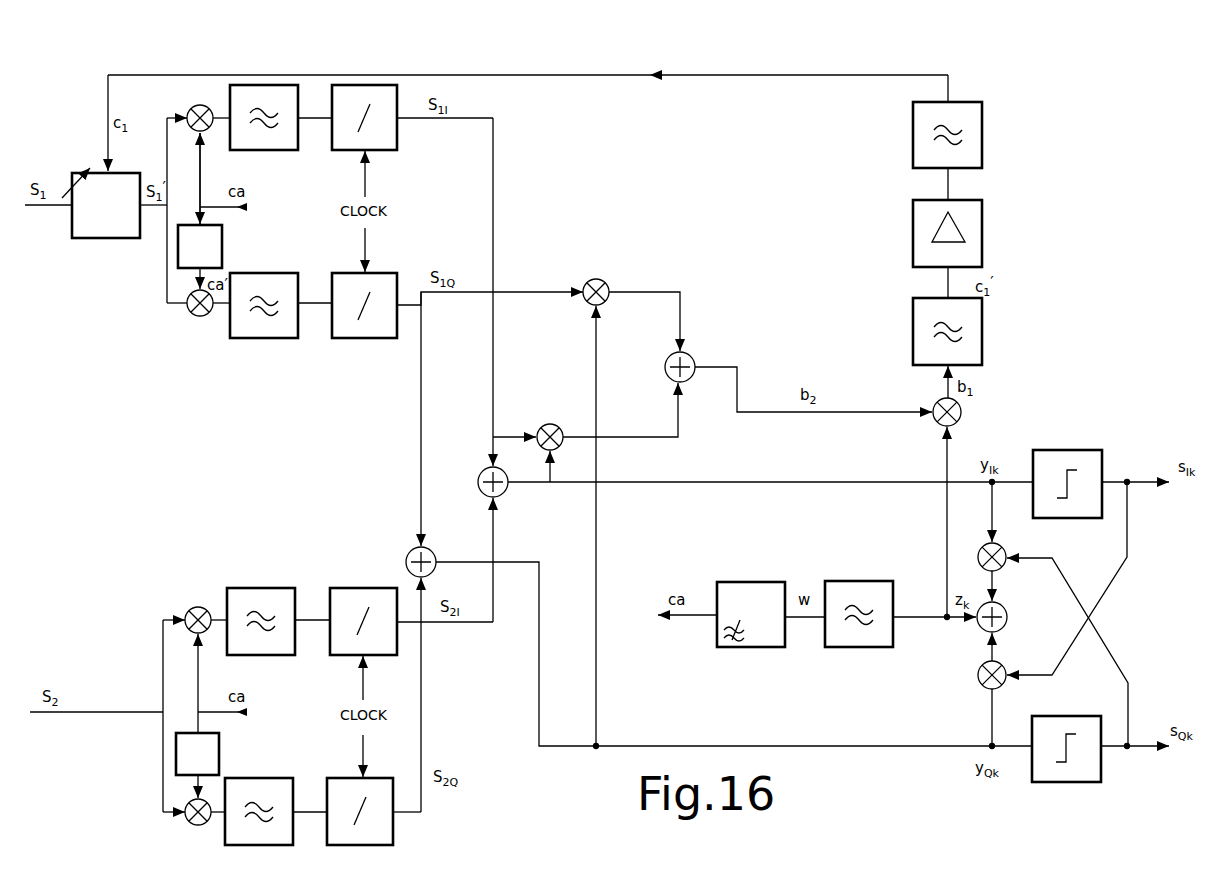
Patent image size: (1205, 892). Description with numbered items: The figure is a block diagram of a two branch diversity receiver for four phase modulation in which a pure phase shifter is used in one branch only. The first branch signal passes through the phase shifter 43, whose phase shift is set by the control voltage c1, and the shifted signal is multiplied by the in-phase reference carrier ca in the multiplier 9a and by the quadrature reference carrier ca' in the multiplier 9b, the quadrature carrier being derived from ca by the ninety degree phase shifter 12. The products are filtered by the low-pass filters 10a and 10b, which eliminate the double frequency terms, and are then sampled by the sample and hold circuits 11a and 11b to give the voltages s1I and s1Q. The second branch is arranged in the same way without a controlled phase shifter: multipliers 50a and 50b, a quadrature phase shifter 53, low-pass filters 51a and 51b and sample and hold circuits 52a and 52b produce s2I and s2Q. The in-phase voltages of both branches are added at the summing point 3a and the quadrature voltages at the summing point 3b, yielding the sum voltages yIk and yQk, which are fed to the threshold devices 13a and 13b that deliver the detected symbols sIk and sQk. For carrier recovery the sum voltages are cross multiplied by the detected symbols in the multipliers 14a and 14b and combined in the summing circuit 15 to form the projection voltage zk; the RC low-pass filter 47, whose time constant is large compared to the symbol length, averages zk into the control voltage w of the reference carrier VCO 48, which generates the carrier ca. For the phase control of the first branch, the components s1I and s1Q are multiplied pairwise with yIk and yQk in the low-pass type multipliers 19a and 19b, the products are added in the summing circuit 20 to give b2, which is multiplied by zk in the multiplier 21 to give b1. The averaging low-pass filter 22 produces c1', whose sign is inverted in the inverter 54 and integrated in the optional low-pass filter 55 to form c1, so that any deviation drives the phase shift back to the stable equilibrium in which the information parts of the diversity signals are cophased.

The phase shifter 43 is at (116, 233).
The multiplier 9a is at (192, 109).
The multiplier 9b is at (200, 316).
The low-pass filter 10a is at (258, 150).
The low-pass filter 10b is at (264, 338).
The sample and hold circuit 11a is at (385, 152).
The sample and hold circuit 11b is at (357, 338).
The quadrature phase shifter 12 is at (222, 246).
The multiplier 19a is at (543, 426).
The multiplier 19b is at (604, 281).
The summing circuit 20 is at (692, 358).
The multiplier 21 is at (961, 417).
The low-pass filter 22 is at (982, 327).
The inverter 54 is at (982, 237).
The low-pass filter 55 is at (982, 138).
The summing point 3a is at (476, 484).
The summing point 3b is at (416, 550).
The threshold device 13a is at (1080, 450).
The threshold device 13b is at (1046, 782).
The multiplier 14a is at (978, 556).
The multiplier 14b is at (978, 676).
The summing circuit 15 is at (1008, 615).
The low-pass filter 47 is at (860, 647).
The reference carrier VCO 48 is at (744, 647).
The multiplier 50a is at (199, 607).
The multiplier 50b is at (186, 816).
The low-pass filter 51a is at (258, 588).
The low-pass filter 51b is at (258, 780).
The sample and hold circuit 52a is at (351, 588).
The sample and hold circuit 52b is at (343, 780).
The quadrature phase shifter 53 is at (176, 756).